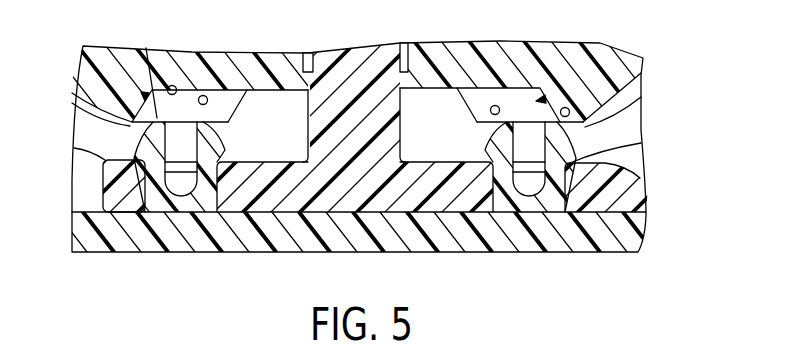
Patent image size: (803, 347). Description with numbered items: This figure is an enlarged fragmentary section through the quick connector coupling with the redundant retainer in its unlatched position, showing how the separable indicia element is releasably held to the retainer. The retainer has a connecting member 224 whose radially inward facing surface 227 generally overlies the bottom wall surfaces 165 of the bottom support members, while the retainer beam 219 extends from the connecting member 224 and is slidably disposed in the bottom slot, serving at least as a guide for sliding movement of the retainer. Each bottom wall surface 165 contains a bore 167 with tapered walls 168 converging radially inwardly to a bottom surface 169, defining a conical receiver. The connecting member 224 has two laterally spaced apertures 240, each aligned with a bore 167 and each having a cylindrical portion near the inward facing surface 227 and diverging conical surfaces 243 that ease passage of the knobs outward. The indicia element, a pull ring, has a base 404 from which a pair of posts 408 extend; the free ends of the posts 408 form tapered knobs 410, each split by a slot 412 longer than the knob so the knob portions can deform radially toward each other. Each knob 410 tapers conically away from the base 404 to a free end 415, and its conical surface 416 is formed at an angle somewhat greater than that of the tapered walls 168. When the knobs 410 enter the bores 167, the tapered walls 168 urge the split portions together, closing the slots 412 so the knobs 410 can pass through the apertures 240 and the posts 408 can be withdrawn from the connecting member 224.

The bottom wall surfaces 165 is at (641, 100).
The bore 167 is at (111, 55).
The tapered walls 168 is at (206, 96).
The bottom surface 169 is at (173, 85).
The retainer beam 219 is at (353, 52).
The connecting member 224 is at (311, 204).
The inward facing surface 227 is at (95, 156).
The apertures 240 is at (121, 191).
The conical surfaces 243 is at (610, 200).
The base 404 is at (443, 213).
The posts 408 is at (131, 142).
The tapered knobs 410 is at (230, 150).
The slot 412 is at (72, 104).
The free end 415 is at (146, 96).
The conical surface 416 is at (235, 132).